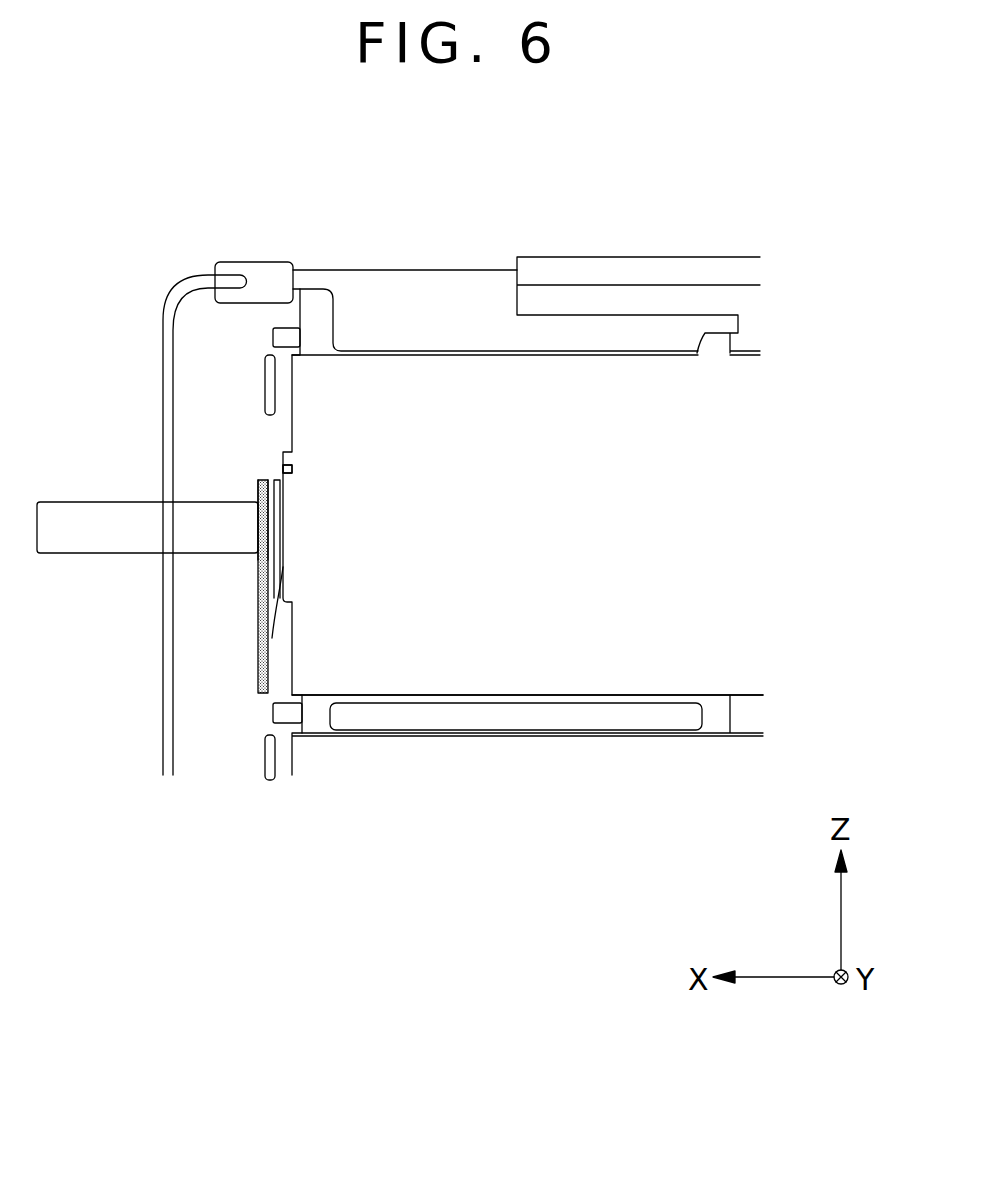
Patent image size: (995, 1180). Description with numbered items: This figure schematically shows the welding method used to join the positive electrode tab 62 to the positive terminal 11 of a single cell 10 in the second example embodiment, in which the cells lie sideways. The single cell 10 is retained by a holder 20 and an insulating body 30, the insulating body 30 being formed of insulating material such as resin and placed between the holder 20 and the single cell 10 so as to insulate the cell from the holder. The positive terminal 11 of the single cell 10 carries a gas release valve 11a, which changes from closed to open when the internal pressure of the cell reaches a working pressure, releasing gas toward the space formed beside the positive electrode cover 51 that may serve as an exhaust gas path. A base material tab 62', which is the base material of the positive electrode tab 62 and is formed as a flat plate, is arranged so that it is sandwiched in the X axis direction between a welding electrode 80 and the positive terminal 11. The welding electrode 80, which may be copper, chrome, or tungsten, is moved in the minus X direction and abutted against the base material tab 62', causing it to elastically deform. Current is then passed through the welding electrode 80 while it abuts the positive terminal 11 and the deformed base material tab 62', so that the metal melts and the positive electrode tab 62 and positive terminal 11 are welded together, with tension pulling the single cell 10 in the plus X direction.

The single cell 10 is at (489, 518).
The positive terminal 11 is at (276, 480).
The gas release valve 11a is at (283, 467).
The holder 20 is at (367, 718).
The insulating body 30 is at (403, 695).
The positive electrode cover 51 is at (168, 418).
The positive electrode tab 62 is at (230, 586).
The base material tab 62' is at (224, 564).
The welding electrode 80 is at (115, 540).